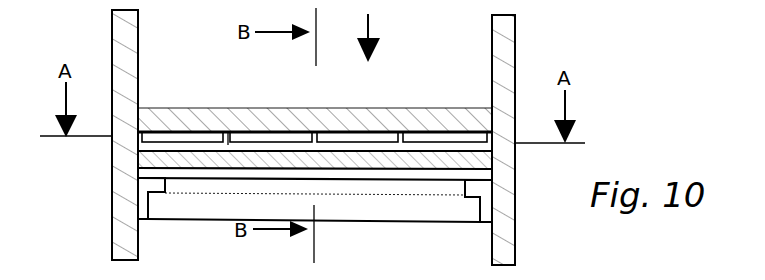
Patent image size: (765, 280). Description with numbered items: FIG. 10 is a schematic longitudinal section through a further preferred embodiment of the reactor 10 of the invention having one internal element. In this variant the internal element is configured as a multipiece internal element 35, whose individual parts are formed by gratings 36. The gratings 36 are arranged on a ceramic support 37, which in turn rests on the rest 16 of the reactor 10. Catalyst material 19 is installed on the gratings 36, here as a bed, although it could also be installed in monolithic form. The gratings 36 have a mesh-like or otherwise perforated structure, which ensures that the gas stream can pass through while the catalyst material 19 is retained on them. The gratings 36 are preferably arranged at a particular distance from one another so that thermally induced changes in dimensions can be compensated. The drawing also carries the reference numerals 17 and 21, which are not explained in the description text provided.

The reactor 10 is at (628, 54).
The rest 16 is at (488, 196).
The side wall 17 is at (516, 32).
The catalyst material 19 is at (196, 132).
The direction of flow 21 is at (372, 27).
The multipiece internal element 35 is at (243, 144).
The gratings 36 is at (164, 132).
The ceramic support 37 is at (363, 183).